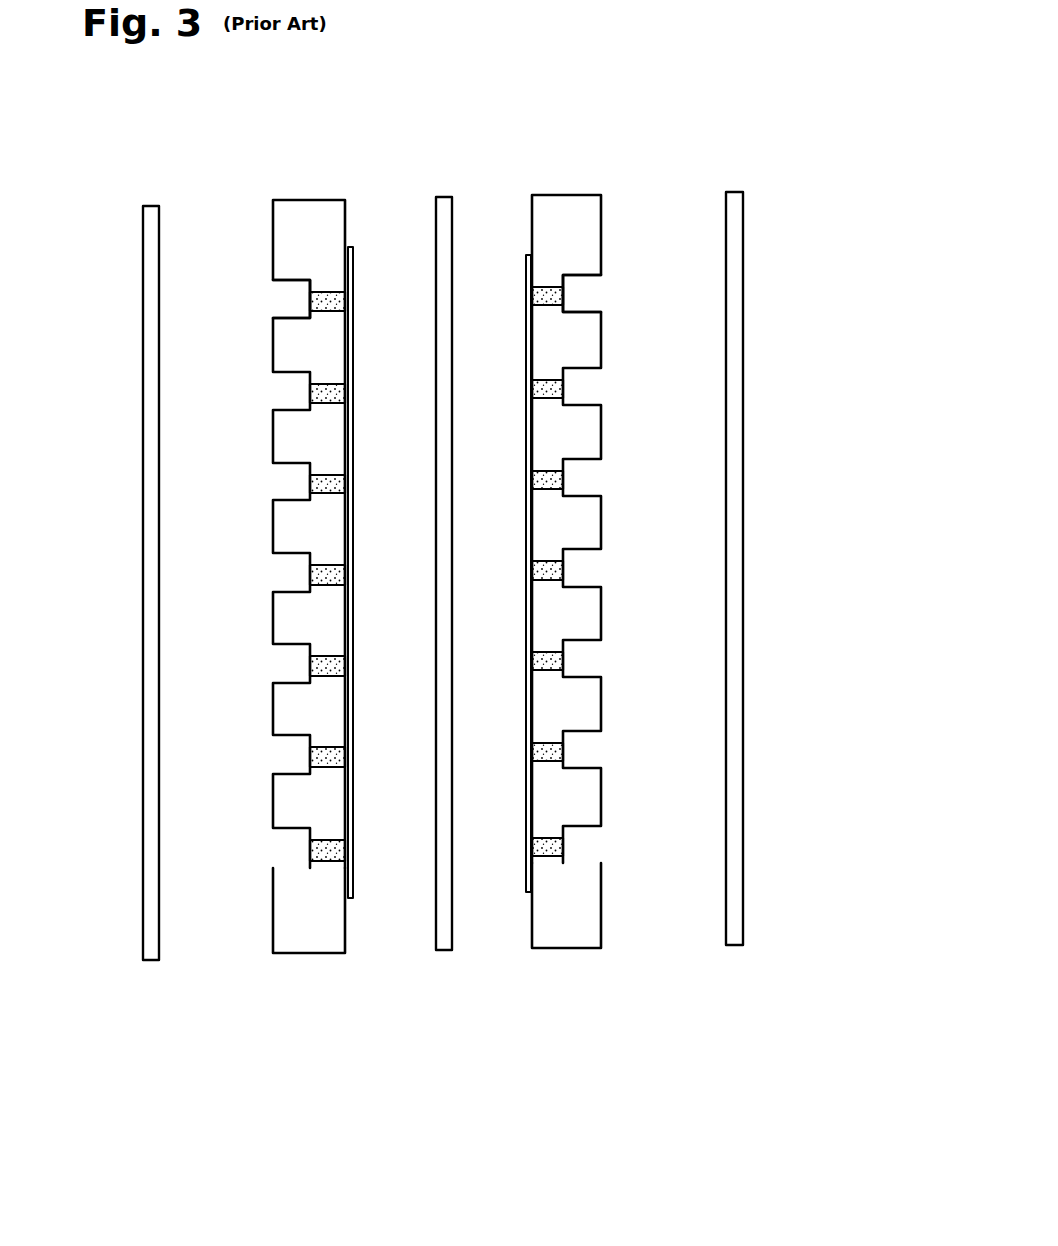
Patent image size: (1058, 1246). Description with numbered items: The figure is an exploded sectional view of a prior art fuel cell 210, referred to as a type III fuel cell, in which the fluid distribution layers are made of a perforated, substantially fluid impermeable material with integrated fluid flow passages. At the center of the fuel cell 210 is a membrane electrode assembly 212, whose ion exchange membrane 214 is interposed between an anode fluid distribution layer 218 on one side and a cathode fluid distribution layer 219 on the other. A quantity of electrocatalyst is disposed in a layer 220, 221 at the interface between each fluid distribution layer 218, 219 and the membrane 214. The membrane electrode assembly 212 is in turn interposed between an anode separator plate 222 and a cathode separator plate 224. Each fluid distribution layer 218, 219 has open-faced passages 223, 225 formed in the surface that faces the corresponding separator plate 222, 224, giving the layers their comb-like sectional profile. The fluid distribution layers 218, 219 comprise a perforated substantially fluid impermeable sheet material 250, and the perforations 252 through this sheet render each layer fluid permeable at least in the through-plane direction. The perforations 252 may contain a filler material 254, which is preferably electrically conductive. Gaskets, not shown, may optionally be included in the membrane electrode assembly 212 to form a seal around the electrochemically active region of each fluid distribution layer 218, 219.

The fuel cell 210 is at (724, 168).
The membrane electrode assembly 212 is at (642, 1001).
The ion exchange membrane 214 is at (445, 196).
The anode fluid distribution layer 218 is at (322, 194).
The cathode fluid distribution layer 219 is at (572, 188).
The electrocatalyst layer 220 is at (350, 252).
The electrocatalyst layer 221 is at (527, 290).
The anode separator plate 222 is at (143, 268).
The open-faced passages 223 is at (283, 300).
The cathode separator plate 224 is at (730, 247).
The open-faced passages 225 is at (587, 298).
The perforated substantially fluid impermeable sheet material 250 is at (292, 942).
The perforations 252 is at (307, 753).
The filler material 254 is at (558, 752).